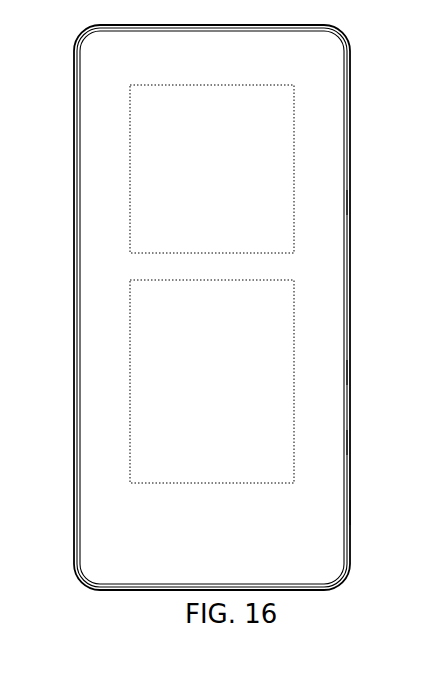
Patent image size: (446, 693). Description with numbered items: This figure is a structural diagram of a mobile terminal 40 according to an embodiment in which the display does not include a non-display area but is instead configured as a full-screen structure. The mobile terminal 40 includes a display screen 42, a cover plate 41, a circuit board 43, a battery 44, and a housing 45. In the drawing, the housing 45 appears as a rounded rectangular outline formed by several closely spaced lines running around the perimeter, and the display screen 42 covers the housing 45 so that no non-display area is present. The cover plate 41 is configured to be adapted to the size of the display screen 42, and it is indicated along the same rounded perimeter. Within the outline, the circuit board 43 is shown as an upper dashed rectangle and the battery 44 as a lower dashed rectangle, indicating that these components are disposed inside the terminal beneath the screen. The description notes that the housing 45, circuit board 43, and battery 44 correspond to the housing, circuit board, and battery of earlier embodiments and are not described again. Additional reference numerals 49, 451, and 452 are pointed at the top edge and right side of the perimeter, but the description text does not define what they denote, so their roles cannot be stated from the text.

The mobile terminal 40 is at (74, 30).
The housing 45 is at (338, 27).
The top edge 49 is at (246, 26).
The display screen 42 is at (341, 200).
The cover plate 41 is at (345, 372).
The first frame portion 451 is at (347, 440).
The second frame portion 452 is at (350, 512).
The circuit board 43 is at (294, 143).
The battery 44 is at (295, 335).